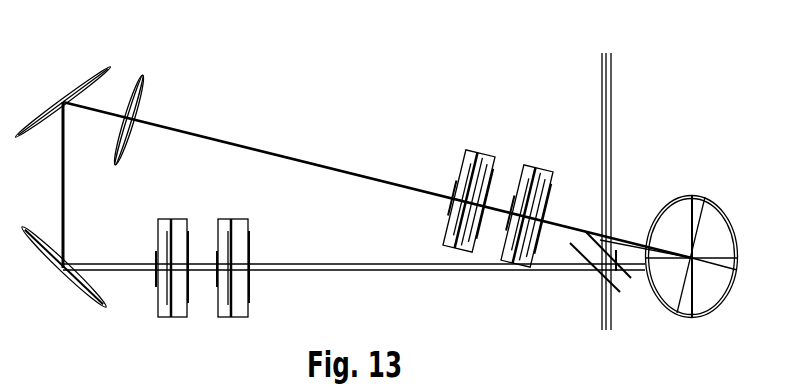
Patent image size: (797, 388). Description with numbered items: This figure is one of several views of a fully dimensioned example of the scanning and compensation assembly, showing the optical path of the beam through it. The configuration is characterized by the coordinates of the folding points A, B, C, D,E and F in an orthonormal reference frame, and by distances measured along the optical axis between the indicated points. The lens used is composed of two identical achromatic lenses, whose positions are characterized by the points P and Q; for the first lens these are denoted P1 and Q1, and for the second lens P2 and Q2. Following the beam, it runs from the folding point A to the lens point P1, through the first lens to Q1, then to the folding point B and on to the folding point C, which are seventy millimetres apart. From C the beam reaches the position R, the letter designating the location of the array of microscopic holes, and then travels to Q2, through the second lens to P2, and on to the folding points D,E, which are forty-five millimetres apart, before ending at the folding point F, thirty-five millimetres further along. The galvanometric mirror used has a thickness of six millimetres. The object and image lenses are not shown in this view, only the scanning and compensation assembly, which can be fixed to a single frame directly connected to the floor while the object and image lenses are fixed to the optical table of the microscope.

The folding point C is at (63, 101).
The folding point B is at (64, 266).
The position of the array of microscopic holes R is at (135, 120).
The point Q of lens L1 Q1 is at (155, 268).
The point P of lens L1 P1 is at (248, 268).
The point Q of lens L2 Q2 is at (458, 200).
The point P of lens L2 P2 is at (539, 215).
The folding point A is at (600, 266).
The folding point F is at (623, 259).
The folding points D and E D,E is at (691, 256).